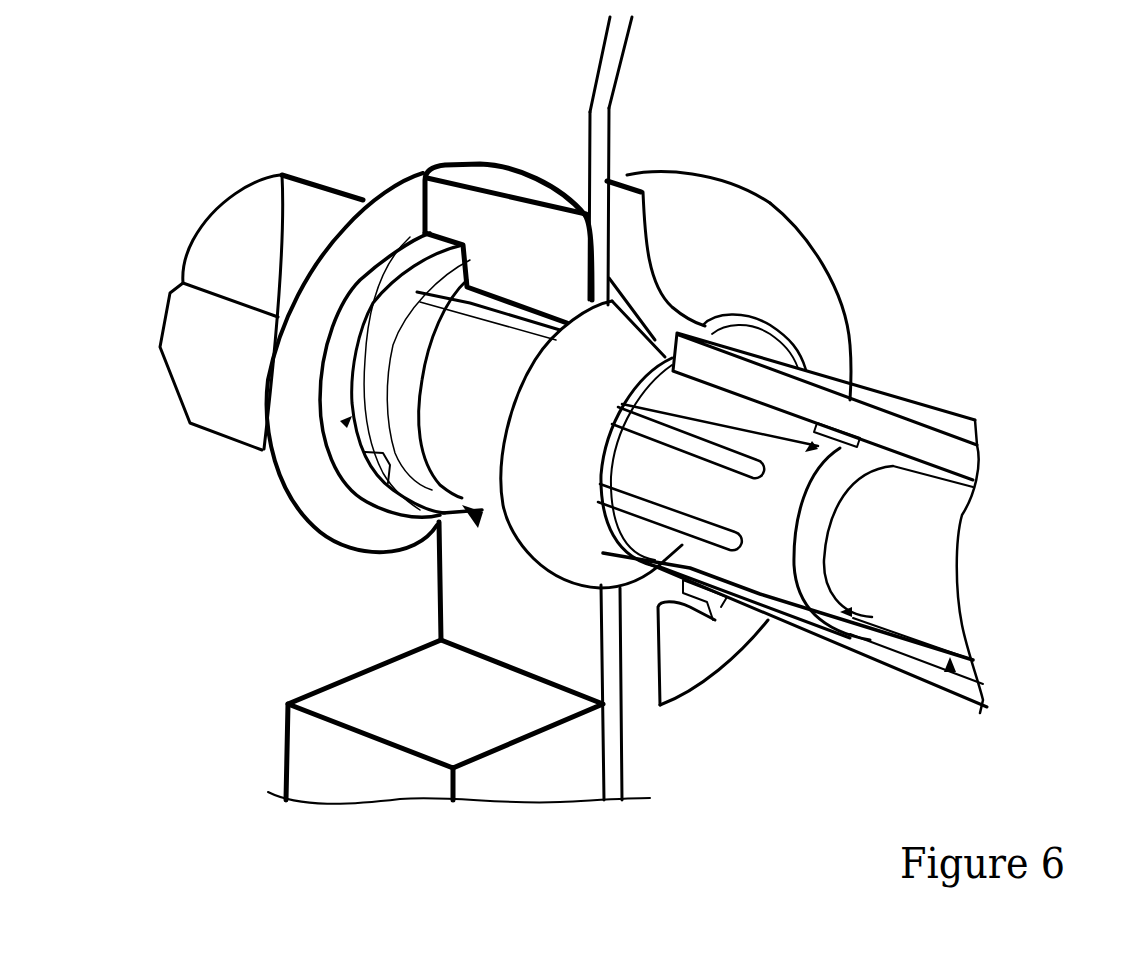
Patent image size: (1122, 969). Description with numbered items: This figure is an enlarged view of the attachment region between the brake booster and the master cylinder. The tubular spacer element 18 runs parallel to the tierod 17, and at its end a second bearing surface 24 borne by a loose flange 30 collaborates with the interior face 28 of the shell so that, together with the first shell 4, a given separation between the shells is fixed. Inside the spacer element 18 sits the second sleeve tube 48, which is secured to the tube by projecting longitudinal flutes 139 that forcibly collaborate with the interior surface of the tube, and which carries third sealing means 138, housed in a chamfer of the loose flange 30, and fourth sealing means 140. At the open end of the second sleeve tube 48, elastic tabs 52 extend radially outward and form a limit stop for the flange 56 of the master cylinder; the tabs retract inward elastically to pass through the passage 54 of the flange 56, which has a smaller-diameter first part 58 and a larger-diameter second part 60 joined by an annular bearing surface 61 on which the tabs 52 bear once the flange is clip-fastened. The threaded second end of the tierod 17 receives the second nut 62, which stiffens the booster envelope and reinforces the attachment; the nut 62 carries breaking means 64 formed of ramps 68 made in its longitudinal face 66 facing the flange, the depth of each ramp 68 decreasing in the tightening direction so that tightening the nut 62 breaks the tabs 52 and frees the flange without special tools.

The first shell 4 is at (607, 70).
The tierod 17 is at (950, 672).
The spacer element 18 is at (975, 426).
The second bearing surface 24 is at (612, 183).
The interior face of second shell 28 is at (642, 34).
The loose flange 30 is at (795, 262).
The second sleeve tube 48 is at (855, 492).
The elastic elements (tabs) 52 is at (505, 318).
The passage 54 is at (510, 320).
The flange of the master cylinder 56 is at (463, 615).
The first part of passage 58 is at (555, 305).
The second part of passage 60 is at (455, 245).
The annular bearing surface 61 is at (392, 232).
The second nut 62 is at (245, 232).
The means for breaking the tabs 64 is at (348, 421).
The longitudinal face of the nut 66 is at (368, 458).
The ramp 68 is at (390, 468).
The third sealing means 138 is at (583, 566).
The projecting longitudinal flutes 139 is at (718, 453).
The fourth sealing means 140 is at (850, 633).